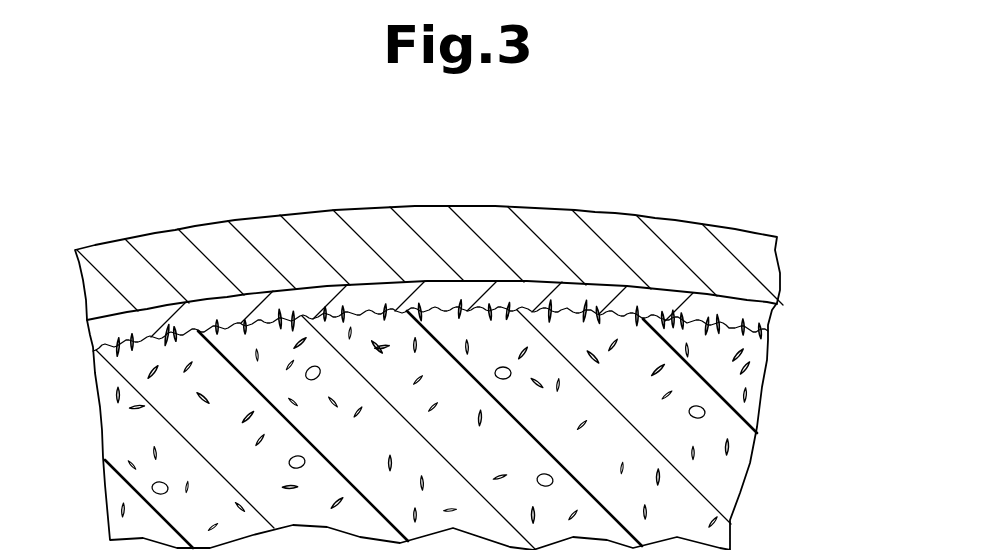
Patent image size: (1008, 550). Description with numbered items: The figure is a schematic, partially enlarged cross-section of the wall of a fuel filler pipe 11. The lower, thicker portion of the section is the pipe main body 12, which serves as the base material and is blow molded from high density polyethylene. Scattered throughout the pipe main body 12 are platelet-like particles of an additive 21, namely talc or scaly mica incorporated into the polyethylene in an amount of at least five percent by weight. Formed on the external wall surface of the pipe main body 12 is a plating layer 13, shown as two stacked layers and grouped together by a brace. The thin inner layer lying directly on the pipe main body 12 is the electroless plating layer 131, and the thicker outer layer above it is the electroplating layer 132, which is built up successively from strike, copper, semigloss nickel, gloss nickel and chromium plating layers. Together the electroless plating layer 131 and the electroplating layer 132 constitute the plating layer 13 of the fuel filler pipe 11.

The fuel filler pipe 11 is at (750, 202).
The pipe main body 12 is at (733, 487).
The plating layer 13 is at (866, 262).
The electroless plating layer 131 is at (763, 320).
The electroplating layer 132 is at (770, 270).
The additive 21 is at (385, 312).